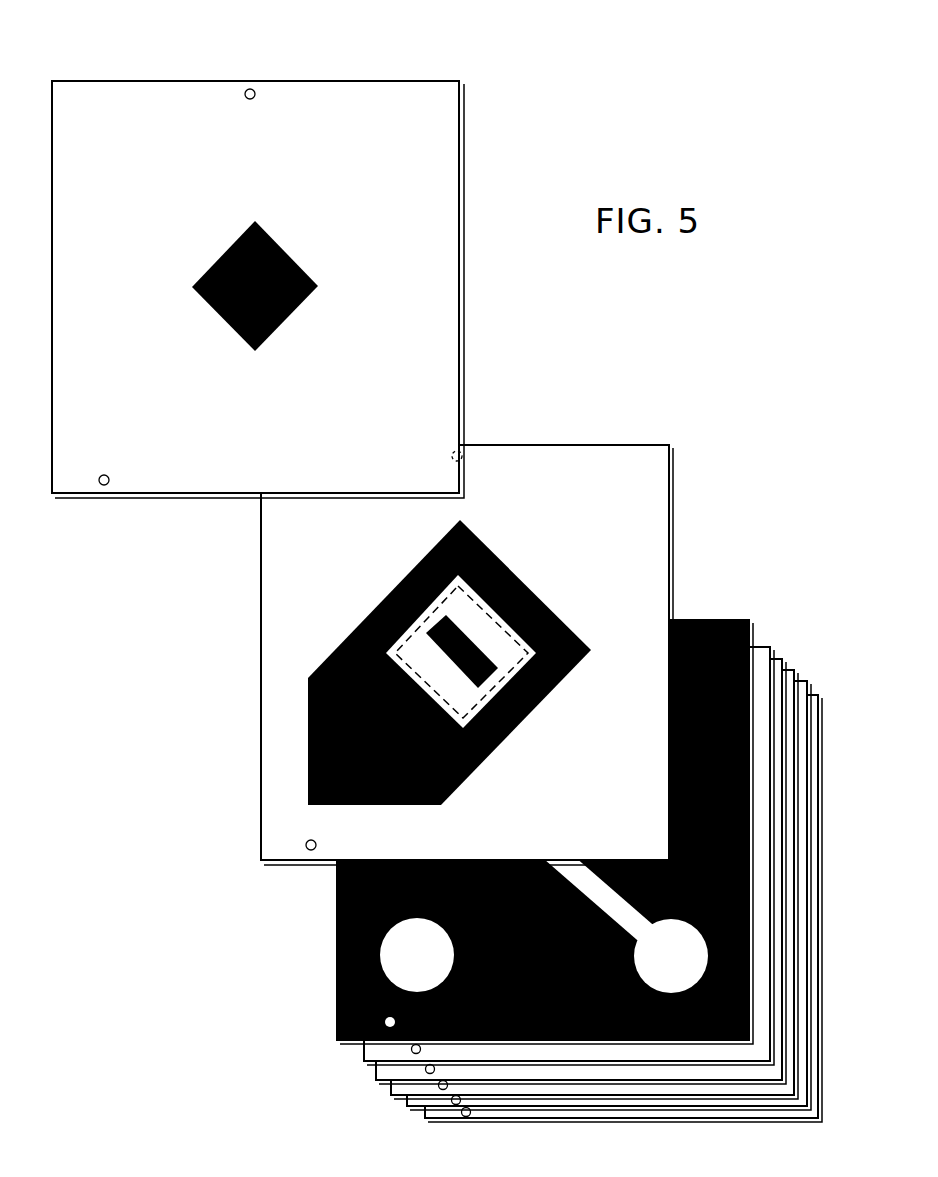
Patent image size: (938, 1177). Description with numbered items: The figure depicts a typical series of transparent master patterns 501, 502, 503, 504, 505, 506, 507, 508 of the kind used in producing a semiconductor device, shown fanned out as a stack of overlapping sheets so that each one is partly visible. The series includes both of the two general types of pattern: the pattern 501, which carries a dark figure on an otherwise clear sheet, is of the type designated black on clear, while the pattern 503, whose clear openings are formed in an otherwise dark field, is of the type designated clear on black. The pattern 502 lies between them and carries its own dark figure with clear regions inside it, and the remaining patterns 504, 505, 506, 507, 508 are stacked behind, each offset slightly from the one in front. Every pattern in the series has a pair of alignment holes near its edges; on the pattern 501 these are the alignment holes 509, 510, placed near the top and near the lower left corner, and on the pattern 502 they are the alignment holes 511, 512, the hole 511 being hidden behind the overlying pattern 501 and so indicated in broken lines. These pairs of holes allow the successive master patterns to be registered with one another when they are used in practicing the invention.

The master pattern 501 is at (447, 298).
The master pattern 502 is at (657, 537).
The master pattern 503 is at (328, 956).
The master pattern 504 is at (365, 1043).
The master pattern 505 is at (378, 1063).
The master pattern 506 is at (392, 1080).
The master pattern 507 is at (405, 1093).
The master pattern 508 is at (418, 1107).
The alignment hole 509 is at (246, 82).
The alignment hole 510 is at (99, 477).
The alignment hole 511 is at (453, 443).
The alignment hole 512 is at (297, 836).